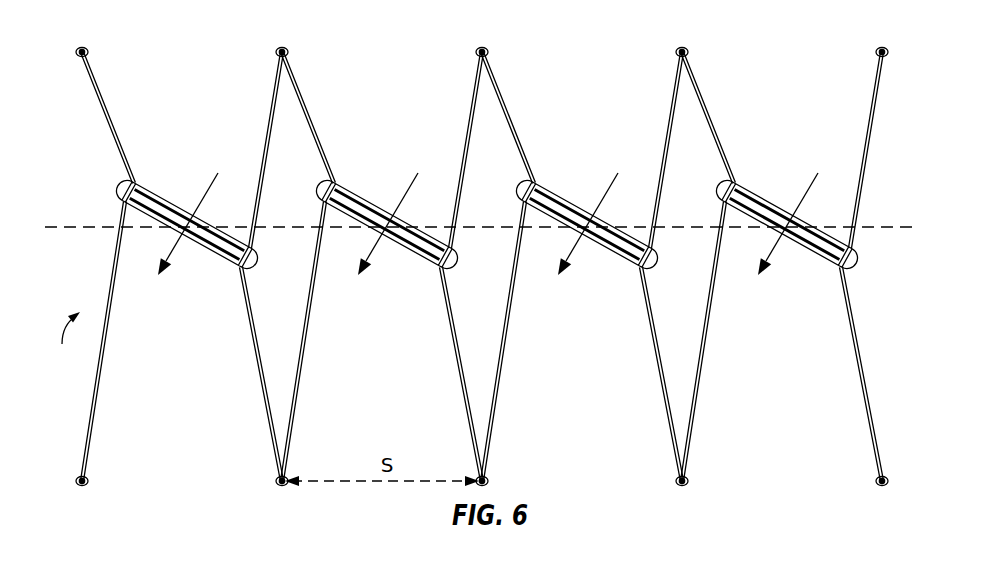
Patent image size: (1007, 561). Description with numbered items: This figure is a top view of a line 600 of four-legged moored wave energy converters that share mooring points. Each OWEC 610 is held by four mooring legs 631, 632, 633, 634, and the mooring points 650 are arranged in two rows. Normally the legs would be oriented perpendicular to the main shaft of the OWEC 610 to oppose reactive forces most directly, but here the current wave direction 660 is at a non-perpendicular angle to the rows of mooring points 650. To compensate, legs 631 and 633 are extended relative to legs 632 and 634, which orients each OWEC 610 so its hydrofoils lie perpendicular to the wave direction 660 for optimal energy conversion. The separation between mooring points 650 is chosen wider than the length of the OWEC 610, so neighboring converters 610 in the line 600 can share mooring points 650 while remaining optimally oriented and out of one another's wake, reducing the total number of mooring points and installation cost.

The line 600 is at (64, 343).
The OWEC 610 is at (117, 190).
The leg 631 is at (270, 112).
The leg 632 is at (258, 375).
The leg 633 is at (104, 377).
The leg 634 is at (113, 113).
The mooring point 650 is at (88, 53).
The wave direction 660 is at (205, 192).